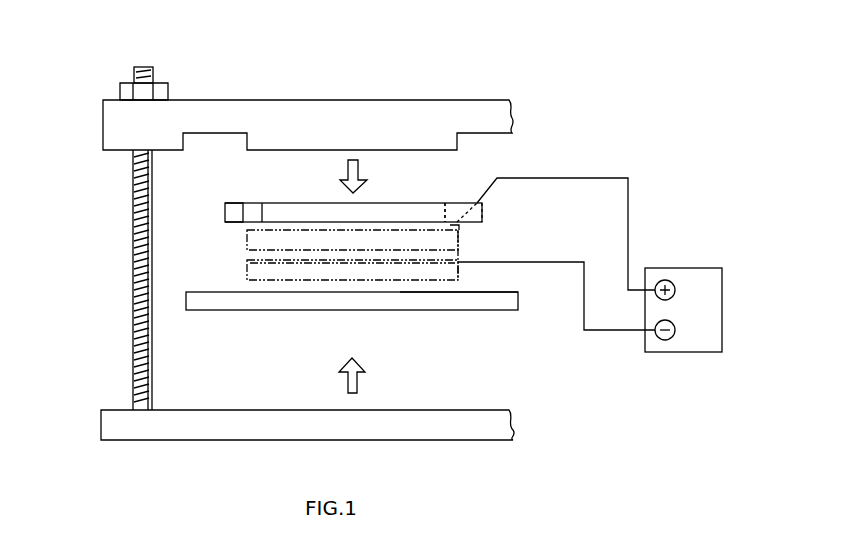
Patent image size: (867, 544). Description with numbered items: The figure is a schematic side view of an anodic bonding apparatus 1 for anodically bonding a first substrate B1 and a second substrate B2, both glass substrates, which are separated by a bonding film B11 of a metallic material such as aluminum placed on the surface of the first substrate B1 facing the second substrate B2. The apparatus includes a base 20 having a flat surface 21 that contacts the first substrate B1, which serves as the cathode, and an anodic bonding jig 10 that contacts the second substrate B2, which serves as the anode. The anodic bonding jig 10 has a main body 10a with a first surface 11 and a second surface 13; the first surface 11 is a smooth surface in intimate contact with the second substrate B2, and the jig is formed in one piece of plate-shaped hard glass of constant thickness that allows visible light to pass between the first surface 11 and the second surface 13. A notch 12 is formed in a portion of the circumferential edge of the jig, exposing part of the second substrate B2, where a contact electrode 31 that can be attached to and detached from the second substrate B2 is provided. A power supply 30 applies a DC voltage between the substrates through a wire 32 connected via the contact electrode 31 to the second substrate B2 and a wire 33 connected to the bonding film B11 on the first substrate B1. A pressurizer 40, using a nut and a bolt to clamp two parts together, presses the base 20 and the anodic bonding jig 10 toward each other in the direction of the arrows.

The anodic bonding apparatus 1 is at (644, 80).
The anodic bonding jig 10 is at (486, 213).
The main body 10a is at (480, 205).
The first surface 11 is at (270, 220).
The notch 12 is at (445, 202).
The second surface 13 is at (243, 204).
The base 20 is at (516, 304).
The flat surface 21 is at (485, 292).
The power supply 30 is at (714, 264).
The contact electrode 31 is at (462, 225).
The wire 32 is at (603, 178).
The wire 33 is at (585, 300).
The pressurizer 40 is at (121, 176).
The first substrate B1 is at (247, 270).
The second substrate B2 is at (247, 240).
The bonding film B11 is at (460, 262).